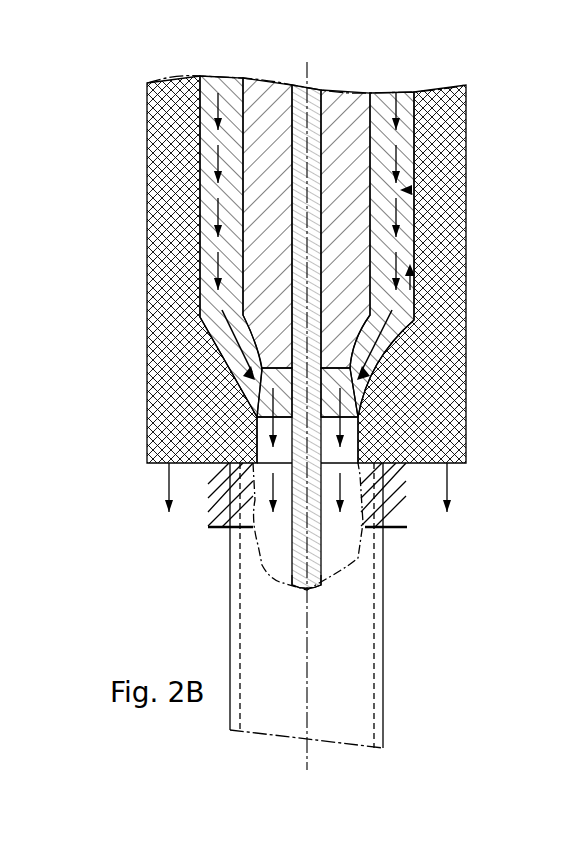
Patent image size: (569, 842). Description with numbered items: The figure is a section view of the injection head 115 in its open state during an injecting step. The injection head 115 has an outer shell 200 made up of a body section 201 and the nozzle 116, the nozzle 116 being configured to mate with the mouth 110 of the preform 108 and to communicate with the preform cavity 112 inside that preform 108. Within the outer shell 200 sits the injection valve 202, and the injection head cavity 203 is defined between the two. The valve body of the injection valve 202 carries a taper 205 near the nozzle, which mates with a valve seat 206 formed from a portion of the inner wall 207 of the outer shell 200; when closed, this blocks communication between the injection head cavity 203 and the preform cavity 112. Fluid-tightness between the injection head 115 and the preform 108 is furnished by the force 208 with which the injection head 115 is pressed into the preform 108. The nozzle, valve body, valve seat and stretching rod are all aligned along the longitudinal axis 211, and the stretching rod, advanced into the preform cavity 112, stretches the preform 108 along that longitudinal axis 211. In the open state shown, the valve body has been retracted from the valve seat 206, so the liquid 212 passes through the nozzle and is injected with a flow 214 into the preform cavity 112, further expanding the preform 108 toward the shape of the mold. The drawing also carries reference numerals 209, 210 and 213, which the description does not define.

The preform 108 is at (393, 715).
The mouth 110 is at (207, 470).
The preform cavity 112 is at (358, 557).
The injection head 115 is at (490, 375).
The nozzle 116 is at (350, 447).
The outer shell 200 is at (150, 122).
The body section 201 is at (122, 236).
The injection valve 202 is at (397, 249).
The injection head cavity 203 is at (405, 92).
The taper 205 is at (268, 330).
The valve seat 206 is at (253, 388).
The inner wall 207 is at (410, 290).
The force 208 is at (165, 492).
The central rod 209 is at (325, 92).
The rod tip 210 is at (300, 550).
The longitudinal axis 211 is at (308, 762).
The liquid 212 is at (412, 190).
The left outlet channel 213 is at (290, 440).
The flow 214 is at (402, 492).